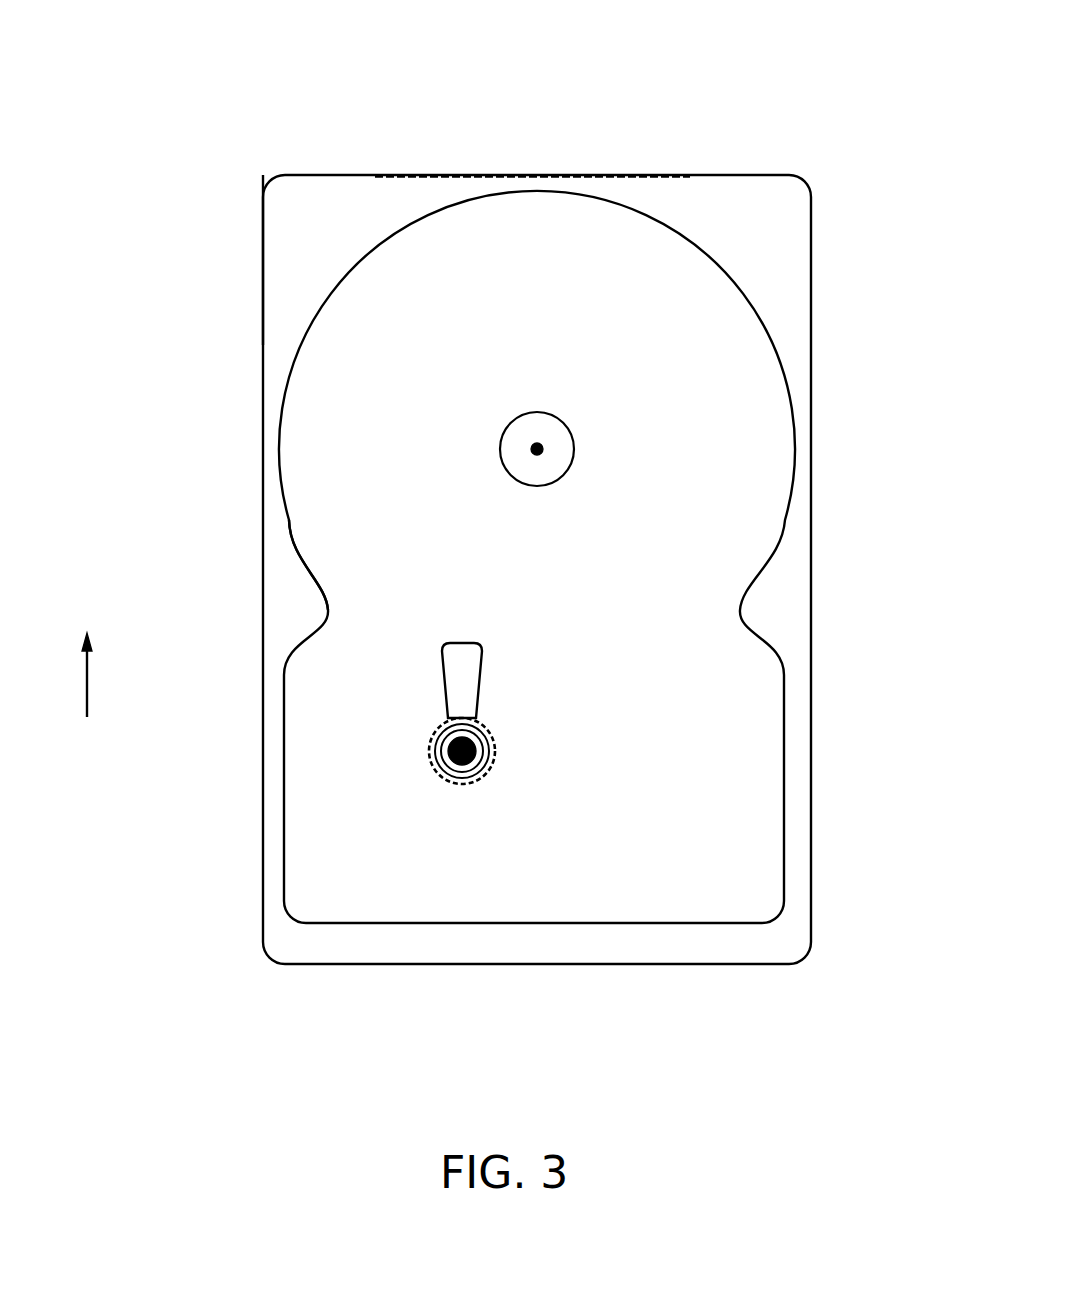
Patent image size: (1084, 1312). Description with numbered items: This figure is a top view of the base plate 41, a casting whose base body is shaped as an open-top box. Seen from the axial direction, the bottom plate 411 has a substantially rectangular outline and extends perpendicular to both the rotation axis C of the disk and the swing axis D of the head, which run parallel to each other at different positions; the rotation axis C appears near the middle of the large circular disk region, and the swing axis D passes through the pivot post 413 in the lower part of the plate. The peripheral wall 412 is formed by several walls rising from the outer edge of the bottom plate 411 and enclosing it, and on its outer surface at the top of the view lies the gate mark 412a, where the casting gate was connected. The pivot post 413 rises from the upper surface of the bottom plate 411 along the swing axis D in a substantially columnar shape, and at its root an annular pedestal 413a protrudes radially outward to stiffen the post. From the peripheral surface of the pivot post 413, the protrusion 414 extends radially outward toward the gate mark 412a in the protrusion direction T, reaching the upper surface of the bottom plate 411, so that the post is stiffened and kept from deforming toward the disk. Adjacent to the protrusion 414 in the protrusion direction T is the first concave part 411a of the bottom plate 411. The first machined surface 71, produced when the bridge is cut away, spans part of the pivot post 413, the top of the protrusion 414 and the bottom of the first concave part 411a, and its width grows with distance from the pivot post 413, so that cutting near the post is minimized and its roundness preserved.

The base plate 41 is at (792, 117).
The peripheral wall 412 is at (268, 347).
The gate mark 412a is at (360, 174).
The bottom plate 411 is at (337, 546).
The first concave part 411a is at (450, 663).
The first machined surface 71 is at (468, 650).
The pivot post 413 is at (488, 772).
The pedestal 413a is at (433, 753).
The protrusion 414 is at (455, 717).
The rotation axis C is at (543, 445).
The swing axis D is at (448, 768).
The protrusion direction T is at (84, 693).